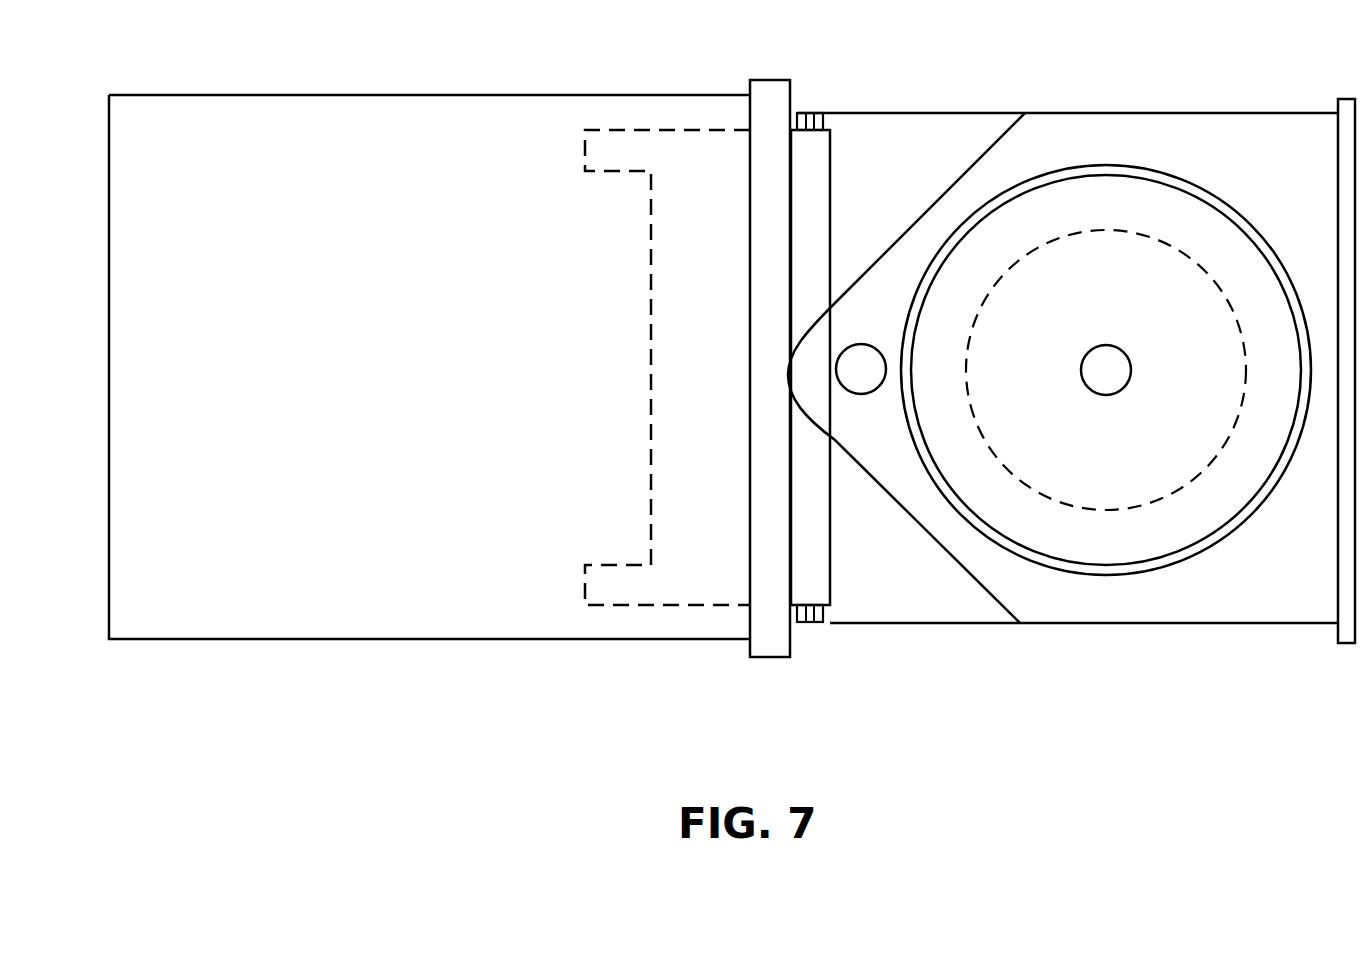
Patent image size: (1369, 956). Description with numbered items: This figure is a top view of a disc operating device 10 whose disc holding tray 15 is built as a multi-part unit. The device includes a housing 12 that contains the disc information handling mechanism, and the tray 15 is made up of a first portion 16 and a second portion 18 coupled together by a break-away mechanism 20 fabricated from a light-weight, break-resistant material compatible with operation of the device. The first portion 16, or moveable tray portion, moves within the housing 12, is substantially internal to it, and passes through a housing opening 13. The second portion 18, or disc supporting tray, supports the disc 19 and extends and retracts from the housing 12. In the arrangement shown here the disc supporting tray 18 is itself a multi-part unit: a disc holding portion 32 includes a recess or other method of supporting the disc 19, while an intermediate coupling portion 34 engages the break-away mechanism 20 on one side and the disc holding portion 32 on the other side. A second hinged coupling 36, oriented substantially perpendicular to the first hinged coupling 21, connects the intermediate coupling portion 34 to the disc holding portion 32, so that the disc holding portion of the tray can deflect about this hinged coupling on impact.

The disc operating device 10 is at (576, 660).
The housing 12 is at (338, 640).
The housing opening 13 is at (790, 645).
The disc holding tray 15 is at (997, 98).
The first portion 16 is at (692, 624).
The second portion 18 is at (1115, 604).
The disc 19 is at (1115, 193).
The break-away mechanism 20 is at (815, 648).
The first hinged coupling 21 is at (820, 103).
The disc holding portion 32 is at (1243, 113).
The intermediate coupling portion 34 is at (898, 113).
The second hinged coupling 36 is at (861, 394).